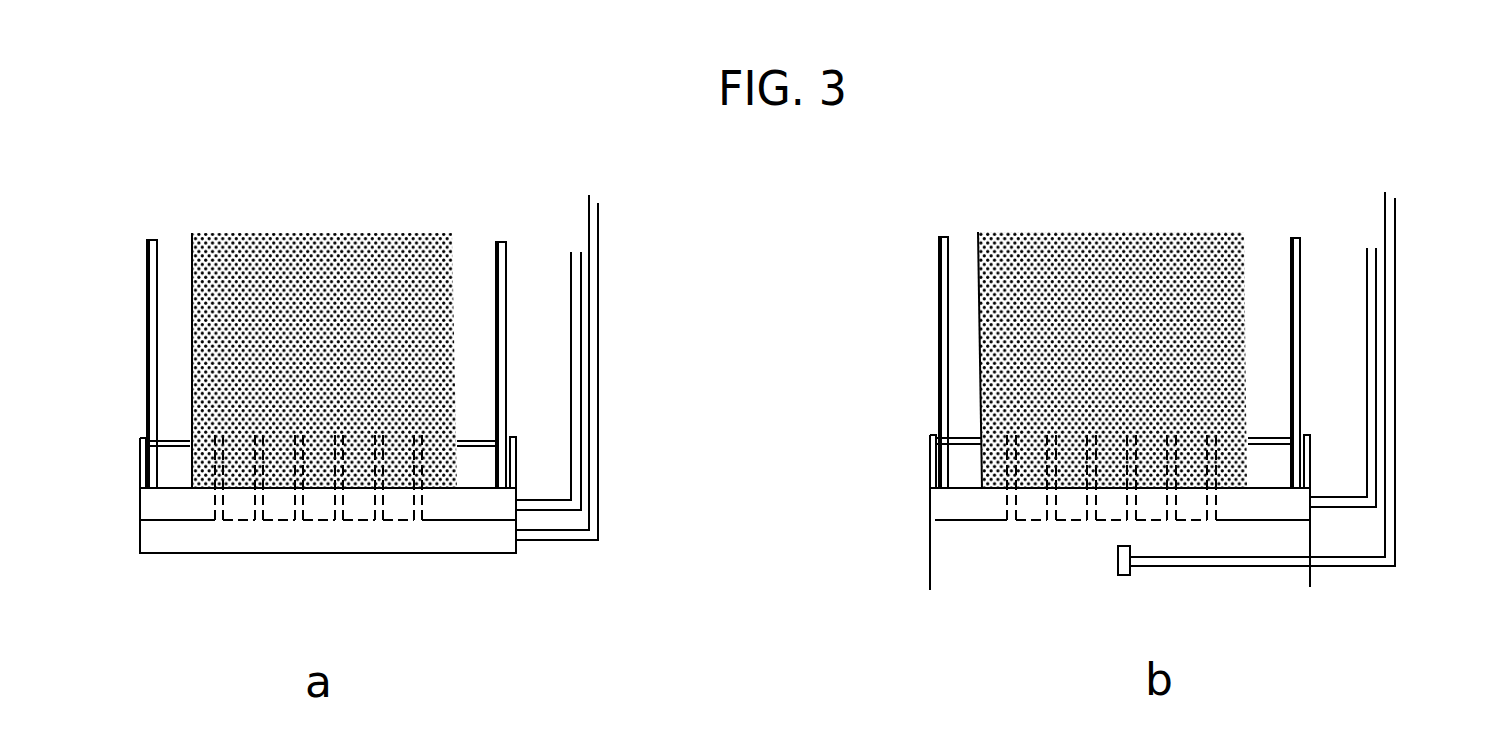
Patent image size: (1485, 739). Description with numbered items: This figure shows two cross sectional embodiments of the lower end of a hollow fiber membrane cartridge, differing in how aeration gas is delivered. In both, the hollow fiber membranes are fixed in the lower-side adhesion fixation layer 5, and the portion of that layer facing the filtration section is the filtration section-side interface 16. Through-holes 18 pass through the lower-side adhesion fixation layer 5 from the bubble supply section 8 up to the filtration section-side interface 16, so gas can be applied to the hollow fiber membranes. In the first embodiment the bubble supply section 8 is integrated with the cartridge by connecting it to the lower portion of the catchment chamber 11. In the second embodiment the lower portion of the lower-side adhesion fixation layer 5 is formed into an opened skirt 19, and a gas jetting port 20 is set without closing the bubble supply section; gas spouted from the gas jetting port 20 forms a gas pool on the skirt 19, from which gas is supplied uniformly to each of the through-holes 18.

The lower-side adhesion fixation layer 5 is at (172, 460).
The bubble supply section 8 is at (308, 543).
The catchment chamber 11 is at (440, 507).
The filtration section-side interface 16 is at (470, 445).
The through-holes 18 is at (375, 500).
The skirt 19 is at (930, 542).
The gas jetting port 20 is at (1127, 567).